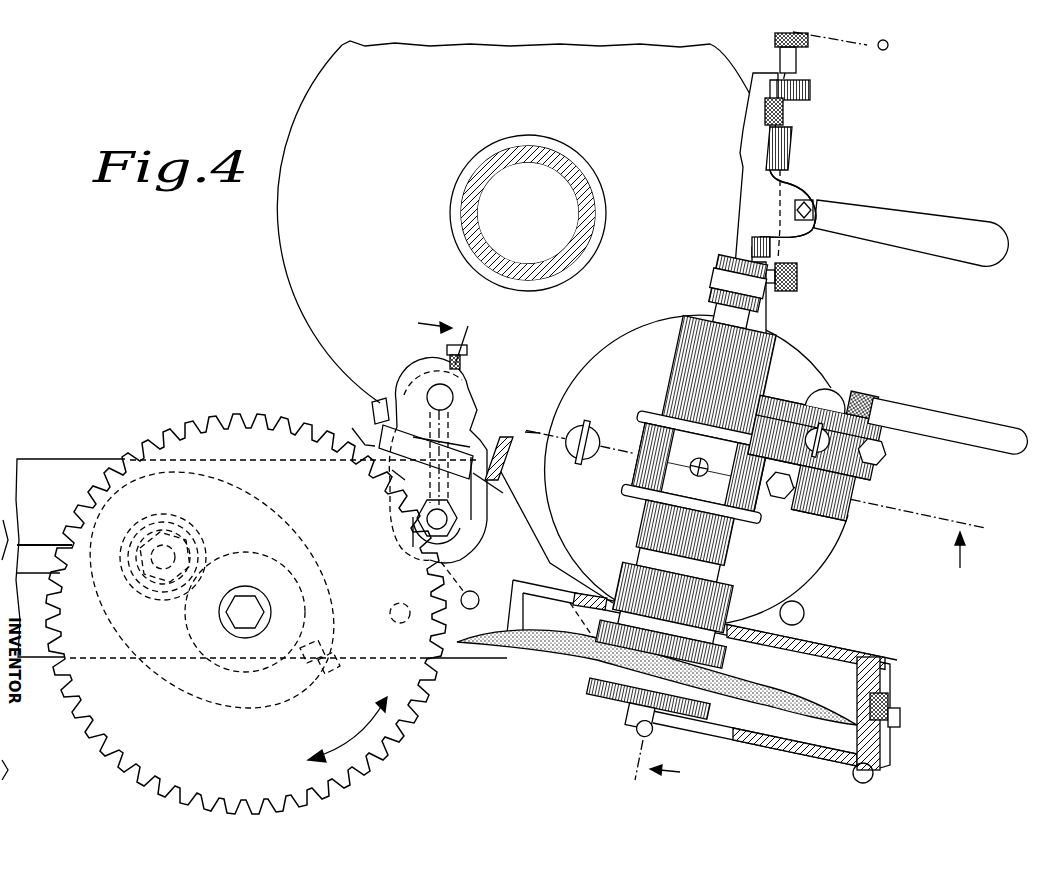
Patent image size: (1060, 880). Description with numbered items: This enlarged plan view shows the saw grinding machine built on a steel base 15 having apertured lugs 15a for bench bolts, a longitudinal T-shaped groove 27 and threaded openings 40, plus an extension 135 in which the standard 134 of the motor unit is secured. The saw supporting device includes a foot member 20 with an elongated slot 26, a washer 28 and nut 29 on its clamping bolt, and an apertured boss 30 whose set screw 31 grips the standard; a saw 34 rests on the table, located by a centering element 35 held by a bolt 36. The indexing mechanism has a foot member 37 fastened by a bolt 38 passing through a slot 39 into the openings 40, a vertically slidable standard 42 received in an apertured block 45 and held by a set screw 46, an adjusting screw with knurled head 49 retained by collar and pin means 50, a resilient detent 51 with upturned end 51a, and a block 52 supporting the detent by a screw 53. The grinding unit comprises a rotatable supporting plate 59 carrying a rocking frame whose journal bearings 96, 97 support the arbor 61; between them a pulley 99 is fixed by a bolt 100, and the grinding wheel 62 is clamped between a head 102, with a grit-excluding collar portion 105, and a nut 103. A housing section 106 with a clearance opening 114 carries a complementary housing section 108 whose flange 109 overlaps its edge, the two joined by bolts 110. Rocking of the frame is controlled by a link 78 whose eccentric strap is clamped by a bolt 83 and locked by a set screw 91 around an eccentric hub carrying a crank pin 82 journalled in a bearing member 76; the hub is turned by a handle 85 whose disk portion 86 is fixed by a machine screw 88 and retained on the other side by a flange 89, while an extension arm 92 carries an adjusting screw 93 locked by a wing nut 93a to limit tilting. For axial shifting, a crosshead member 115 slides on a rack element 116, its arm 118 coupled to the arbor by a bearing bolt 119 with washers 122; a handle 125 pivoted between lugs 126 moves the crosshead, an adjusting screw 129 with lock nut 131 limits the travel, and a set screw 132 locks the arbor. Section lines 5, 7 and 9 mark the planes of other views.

The section line 5- 5 is at (772, 416).
The section line 7- 7 is at (763, 498).
The section line 9- 9 is at (448, 454).
The base 15 is at (76, 462).
The apertured lugs 15a is at (805, 610).
The foot member 20 is at (252, 514).
The elongated slot 26 is at (152, 520).
The T-shaped groove 27 is at (28, 560).
The washer 28 is at (200, 540).
The nut 29 is at (183, 533).
The apertured boss 30 is at (270, 572).
The set screw 31 is at (330, 665).
The saw 34 is at (96, 698).
The centering element 35 is at (280, 612).
The bolt 36 is at (241, 598).
The foot member 37 is at (458, 520).
The bolt 38 is at (452, 535).
The slot 39 is at (463, 493).
The threaded openings 40 is at (410, 598).
The standard 42 is at (444, 397).
The apertured block 45 is at (468, 410).
The set screw 46 is at (465, 356).
The knurled head 49 is at (503, 436).
The collar and pin retaining means 50 is at (387, 402).
The resilient detent 51 is at (392, 470).
The upturned end 51a is at (352, 428).
The block 52 is at (383, 433).
The screw 53 is at (405, 500).
The rotatable supporting plate 59 is at (805, 385).
The arbor 61 is at (713, 298).
The grinding wheel 62 is at (793, 690).
The bearing member 76 is at (792, 502).
The link 78 is at (860, 472).
The crank pin 82 is at (880, 395).
The bolt 83 is at (888, 452).
The handle 85 is at (968, 432).
The disk portion 86 is at (862, 422).
The machine screw 88 is at (840, 395).
The flange 89 is at (860, 495).
The set screw 91 is at (790, 410).
The extension arm 92 is at (613, 424).
The adjusting screw 93 is at (525, 432).
The wing nut 93a is at (636, 498).
The journal bearing 96 is at (698, 340).
The journal bearing 97 is at (732, 555).
The pulley 99 is at (650, 420).
The bolt 100 is at (650, 447).
The head 102 is at (726, 658).
The nut 103 is at (690, 716).
The collar portion 105 is at (570, 553).
The housing section 106 is at (843, 636).
The complementary housing section 108 is at (768, 765).
The flange 109 is at (890, 720).
The bolts 110 is at (878, 777).
The opening 114 is at (722, 597).
The crosshead member 115 is at (745, 128).
The rack element 116 is at (795, 140).
The arm 118 is at (782, 291).
The bearing bolt 119 is at (718, 262).
The washers 122 is at (715, 275).
The handle 125 is at (915, 220).
The lugs 126 is at (812, 196).
The adjusting screw 129 is at (790, 112).
The lock nut 131 is at (795, 76).
The set screw 132 is at (798, 272).
The standard 134 is at (565, 185).
The extension 135 is at (552, 101).